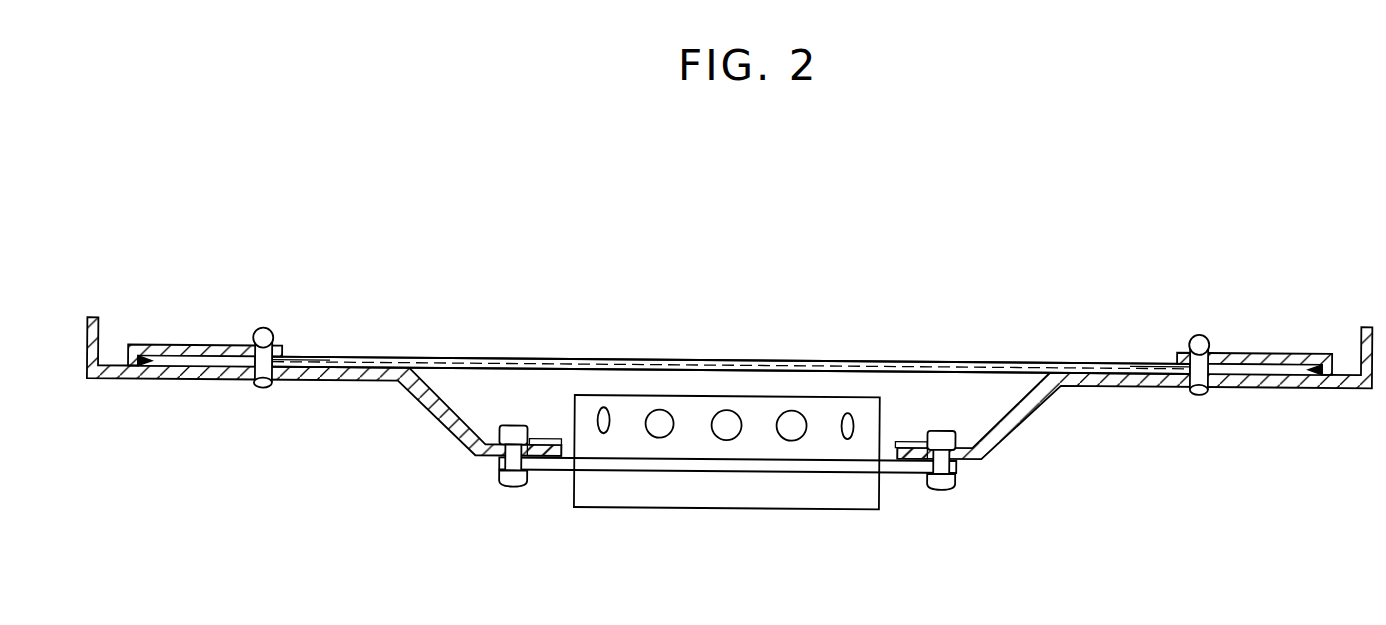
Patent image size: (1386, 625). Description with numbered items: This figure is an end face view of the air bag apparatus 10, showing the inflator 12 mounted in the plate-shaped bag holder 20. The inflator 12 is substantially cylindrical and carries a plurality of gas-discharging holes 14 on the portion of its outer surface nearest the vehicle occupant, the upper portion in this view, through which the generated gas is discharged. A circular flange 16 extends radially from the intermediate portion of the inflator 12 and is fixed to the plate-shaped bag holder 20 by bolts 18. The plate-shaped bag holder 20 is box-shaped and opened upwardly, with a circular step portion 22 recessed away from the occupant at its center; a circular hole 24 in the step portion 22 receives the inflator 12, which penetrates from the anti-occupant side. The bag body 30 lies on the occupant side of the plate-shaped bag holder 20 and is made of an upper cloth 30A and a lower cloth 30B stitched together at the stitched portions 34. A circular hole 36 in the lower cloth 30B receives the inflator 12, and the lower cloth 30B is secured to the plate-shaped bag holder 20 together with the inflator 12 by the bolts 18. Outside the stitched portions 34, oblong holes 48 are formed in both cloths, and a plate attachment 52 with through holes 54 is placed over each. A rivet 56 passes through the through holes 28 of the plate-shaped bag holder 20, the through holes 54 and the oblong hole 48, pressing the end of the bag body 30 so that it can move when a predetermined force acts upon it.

The air bag apparatus 10 is at (739, 274).
The inflator 12 is at (740, 514).
The gas-discharging holes 14 is at (604, 435).
The circular flange 16 is at (890, 475).
The bolts 18 is at (510, 488).
The plate-shaped bag holder 20 is at (1095, 388).
The step portion 22 is at (533, 440).
The circular hole 24 is at (557, 456).
The through holes 28 is at (265, 391).
The bag body 30 is at (799, 355).
The upper cloth 30A is at (918, 361).
The lower cloth 30B is at (975, 430).
The stitched portions 34 is at (282, 362).
The circular hole 36 is at (910, 447).
The oblong holes 48 is at (167, 372).
The plate attachment 52 is at (172, 349).
The through holes 54 is at (260, 338).
The rivet 56 is at (268, 336).